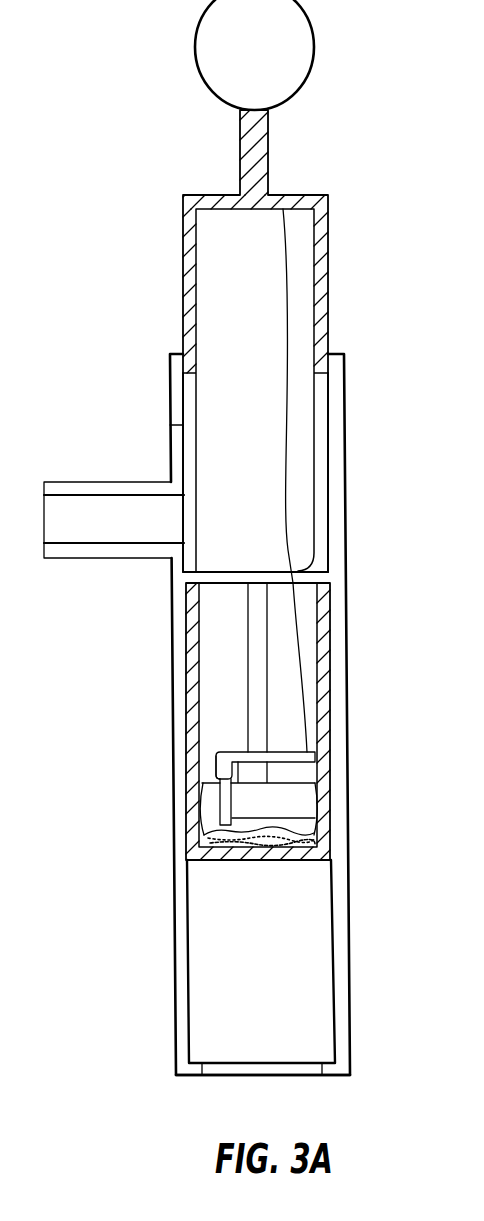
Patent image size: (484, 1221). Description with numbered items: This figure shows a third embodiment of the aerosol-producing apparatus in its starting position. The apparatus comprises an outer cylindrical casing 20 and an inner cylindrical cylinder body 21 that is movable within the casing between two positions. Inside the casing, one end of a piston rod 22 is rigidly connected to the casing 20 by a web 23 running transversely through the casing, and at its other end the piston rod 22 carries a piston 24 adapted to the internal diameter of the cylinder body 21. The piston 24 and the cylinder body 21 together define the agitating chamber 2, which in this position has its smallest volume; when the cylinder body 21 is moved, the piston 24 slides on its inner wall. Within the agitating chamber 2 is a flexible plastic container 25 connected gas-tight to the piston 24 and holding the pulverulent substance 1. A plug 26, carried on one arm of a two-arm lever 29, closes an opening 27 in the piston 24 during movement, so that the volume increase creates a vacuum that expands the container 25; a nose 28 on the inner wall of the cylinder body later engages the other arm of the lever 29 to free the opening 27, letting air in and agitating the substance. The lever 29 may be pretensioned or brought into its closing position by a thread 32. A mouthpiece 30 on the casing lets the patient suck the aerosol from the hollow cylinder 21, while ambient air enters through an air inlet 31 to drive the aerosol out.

The pulverulent substance 1 is at (315, 840).
The agitating chamber 2 is at (258, 828).
The outer cylindrical casing 20 is at (342, 1002).
The inner cylindrical cylinder body 21 is at (325, 683).
The piston rod 22 is at (260, 625).
The web 23 is at (213, 578).
The piston 24 is at (293, 798).
The flexible plastic container 25 is at (300, 825).
The plug 26 is at (216, 762).
The opening 27 is at (225, 810).
The nose 28 is at (322, 559).
The two-arm lever 29 is at (280, 751).
The mouthpiece 30 is at (83, 481).
The air inlet 31 is at (300, 204).
The thread 32 is at (288, 367).